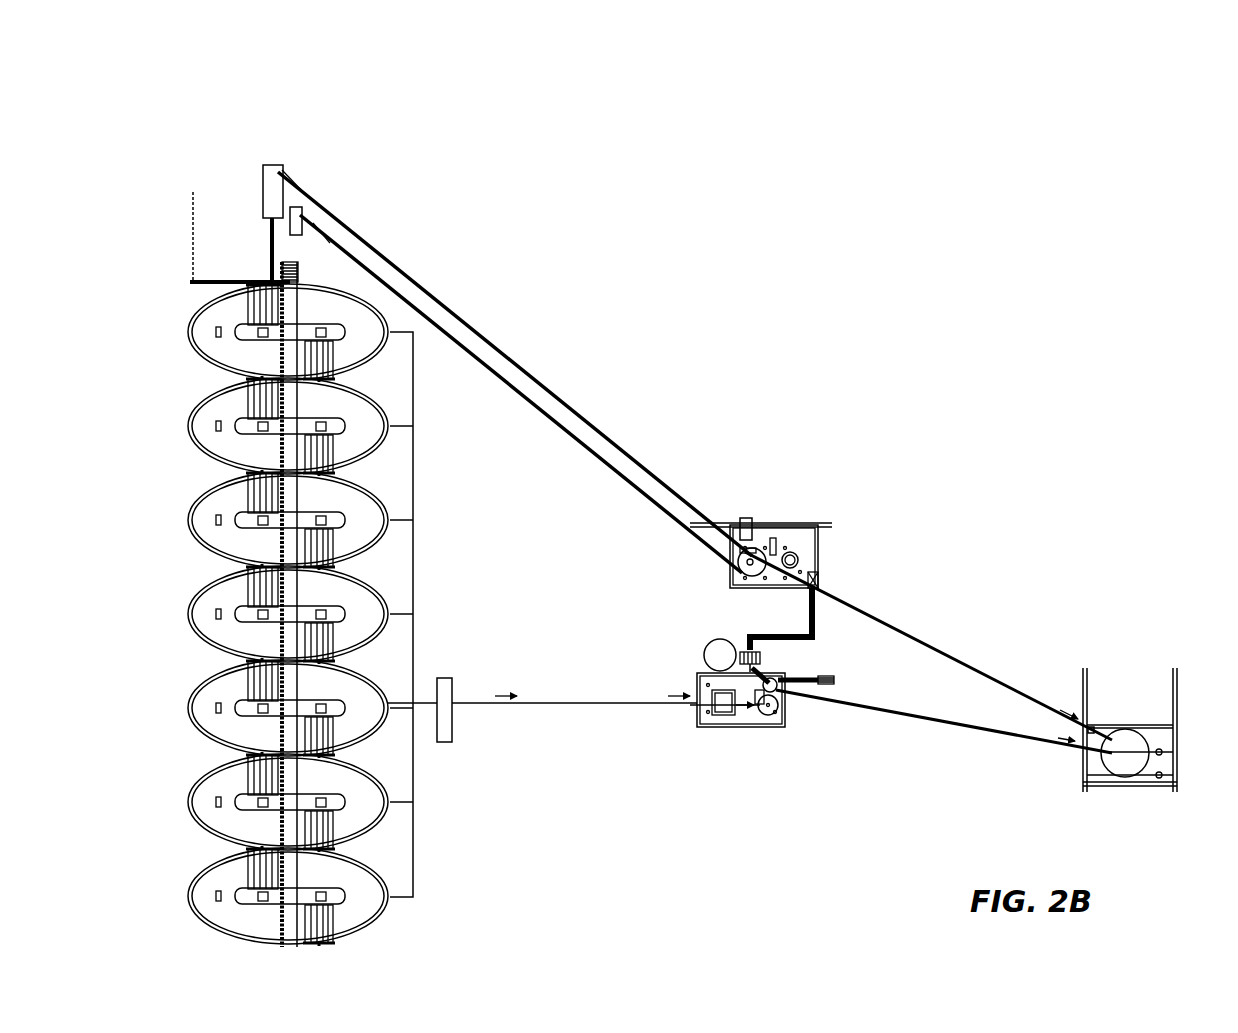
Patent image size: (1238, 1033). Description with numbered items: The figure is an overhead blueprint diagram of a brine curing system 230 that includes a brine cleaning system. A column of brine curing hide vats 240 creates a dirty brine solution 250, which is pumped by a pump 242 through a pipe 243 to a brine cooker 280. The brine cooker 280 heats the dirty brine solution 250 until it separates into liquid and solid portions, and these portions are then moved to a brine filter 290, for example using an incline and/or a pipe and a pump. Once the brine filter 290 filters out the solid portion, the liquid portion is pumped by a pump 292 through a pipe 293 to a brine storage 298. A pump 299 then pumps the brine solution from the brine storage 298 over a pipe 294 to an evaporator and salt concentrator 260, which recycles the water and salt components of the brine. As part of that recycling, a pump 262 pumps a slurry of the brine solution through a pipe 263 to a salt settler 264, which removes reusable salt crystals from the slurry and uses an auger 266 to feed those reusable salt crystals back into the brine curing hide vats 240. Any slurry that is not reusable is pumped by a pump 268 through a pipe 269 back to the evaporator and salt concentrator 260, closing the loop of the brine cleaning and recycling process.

The brine curing system 230 is at (1057, 86).
The brine curing hide vats 240 is at (235, 703).
The pump 242 is at (447, 722).
The pipe 243 is at (503, 705).
The dirty brine solution 250 is at (573, 703).
The evaporator and salt concentrator 260 is at (825, 555).
The pump 262 is at (752, 520).
The pipe 263 is at (688, 498).
The salt settler 264 is at (283, 170).
The auger 266 is at (268, 197).
The pump 268 is at (292, 232).
The pipe 269 is at (476, 362).
The brine cooker 280 is at (718, 703).
The brine filter 290 is at (767, 705).
The pump 292 is at (772, 680).
The pipe 293 is at (952, 723).
The pipe 294 is at (968, 663).
The brine storage 298 is at (1130, 745).
The pump 299 is at (1108, 738).